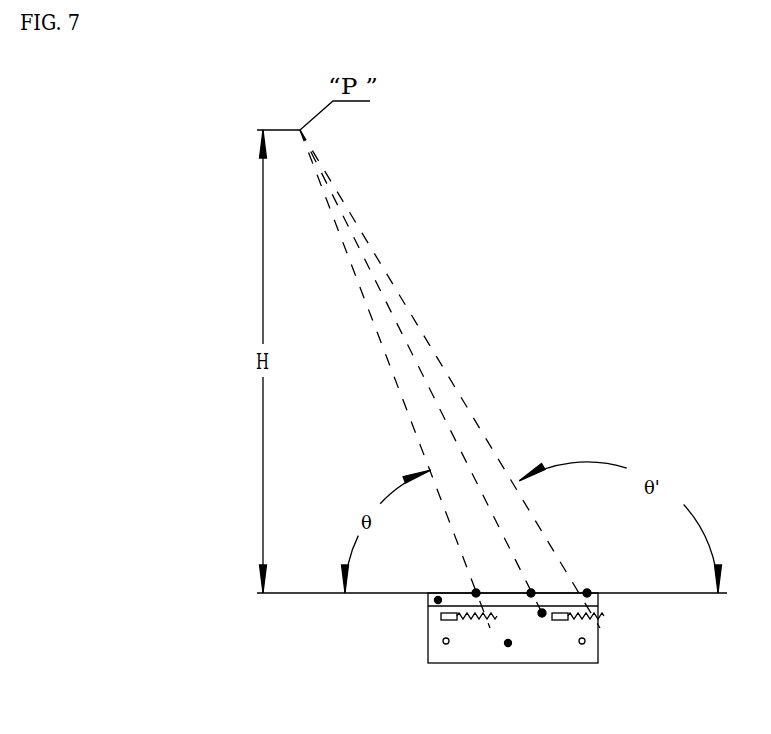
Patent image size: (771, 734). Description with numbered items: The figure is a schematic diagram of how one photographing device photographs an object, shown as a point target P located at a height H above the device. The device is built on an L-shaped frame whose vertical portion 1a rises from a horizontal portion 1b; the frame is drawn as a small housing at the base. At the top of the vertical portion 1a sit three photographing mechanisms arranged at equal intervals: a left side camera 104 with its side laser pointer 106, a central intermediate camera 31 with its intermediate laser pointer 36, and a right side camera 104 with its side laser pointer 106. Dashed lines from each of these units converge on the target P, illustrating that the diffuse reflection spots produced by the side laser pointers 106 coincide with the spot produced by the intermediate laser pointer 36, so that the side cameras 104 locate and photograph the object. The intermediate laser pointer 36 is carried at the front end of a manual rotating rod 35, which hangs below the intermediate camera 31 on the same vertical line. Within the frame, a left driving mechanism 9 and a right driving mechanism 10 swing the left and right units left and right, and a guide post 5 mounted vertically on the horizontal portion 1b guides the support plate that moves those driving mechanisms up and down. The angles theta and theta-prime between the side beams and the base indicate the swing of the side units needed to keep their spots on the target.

The vertical portion 1a is at (479, 628).
The horizontal portion 1b is at (539, 675).
The guide post 5 is at (609, 673).
The left driving mechanism 9 is at (454, 661).
The right driving mechanism 10 is at (613, 641).
The intermediate camera 31 is at (500, 569).
The intermediate laser pointer 36 is at (500, 569).
The manual rotating rod 35 is at (521, 622).
The side camera 104 is at (511, 569).
The side laser pointer 106 is at (511, 569).